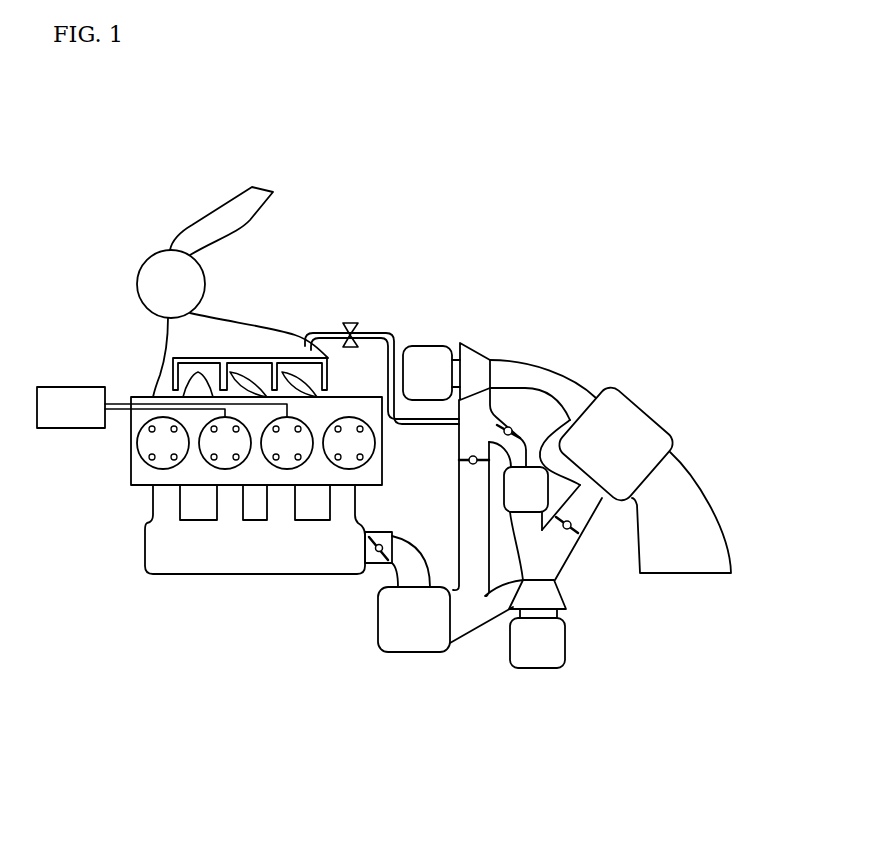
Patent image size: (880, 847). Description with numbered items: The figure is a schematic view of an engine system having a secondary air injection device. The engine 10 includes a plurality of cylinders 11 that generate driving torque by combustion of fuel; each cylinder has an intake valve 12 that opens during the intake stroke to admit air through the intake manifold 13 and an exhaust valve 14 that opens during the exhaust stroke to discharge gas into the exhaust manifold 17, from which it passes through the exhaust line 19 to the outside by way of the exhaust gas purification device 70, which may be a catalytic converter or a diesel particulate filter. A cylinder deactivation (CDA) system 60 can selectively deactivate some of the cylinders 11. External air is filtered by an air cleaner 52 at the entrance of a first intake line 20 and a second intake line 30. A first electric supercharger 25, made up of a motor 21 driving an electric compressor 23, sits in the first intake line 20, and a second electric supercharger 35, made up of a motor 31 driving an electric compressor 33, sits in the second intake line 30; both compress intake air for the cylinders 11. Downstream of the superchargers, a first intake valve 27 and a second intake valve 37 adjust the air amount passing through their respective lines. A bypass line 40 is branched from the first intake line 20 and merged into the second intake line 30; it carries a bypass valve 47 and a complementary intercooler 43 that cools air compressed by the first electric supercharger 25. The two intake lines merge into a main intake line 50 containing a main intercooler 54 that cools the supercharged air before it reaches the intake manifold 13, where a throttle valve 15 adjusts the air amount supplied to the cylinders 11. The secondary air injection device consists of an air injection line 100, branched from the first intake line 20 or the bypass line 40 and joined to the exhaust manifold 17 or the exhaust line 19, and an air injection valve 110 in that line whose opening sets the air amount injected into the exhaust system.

The engine 10 is at (106, 497).
The cylinders 11 is at (137, 445).
The intake valve 12 is at (216, 458).
The intake manifold 13 is at (146, 548).
The exhaust valve 14 is at (213, 425).
The throttle valve 15 is at (388, 531).
The exhaust manifold 17 is at (160, 383).
The exhaust line 19 is at (212, 215).
The first intake line 20 is at (541, 364).
The motor 21 is at (428, 345).
The electric compressor 23 is at (477, 352).
The first electric supercharger 25 is at (508, 305).
The first intake valve 27 is at (459, 460).
The second intake line 30 is at (596, 517).
The motor 31 is at (540, 668).
The electric compressor 33 is at (567, 598).
The second electric supercharger 35 is at (628, 708).
The second intake valve 37 is at (571, 533).
The bypass line 40 is at (513, 543).
The complementary intercooler 43 is at (582, 384).
The bypass valve 47 is at (506, 428).
The main intake line 50 is at (397, 575).
The air cleaner 52 is at (653, 407).
The main intercooler 54 is at (416, 653).
The cylinder deactivation (CDA) system 60 is at (44, 387).
The exhaust gas purification device 70 is at (137, 284).
The air injection line 100 is at (374, 333).
The air injection valve 110 is at (347, 322).